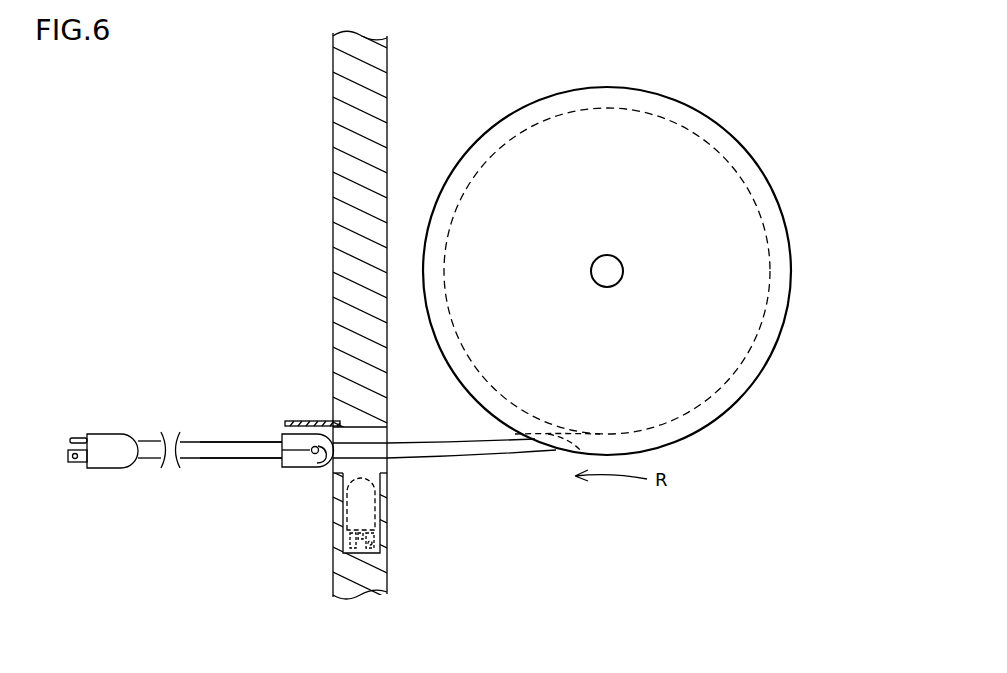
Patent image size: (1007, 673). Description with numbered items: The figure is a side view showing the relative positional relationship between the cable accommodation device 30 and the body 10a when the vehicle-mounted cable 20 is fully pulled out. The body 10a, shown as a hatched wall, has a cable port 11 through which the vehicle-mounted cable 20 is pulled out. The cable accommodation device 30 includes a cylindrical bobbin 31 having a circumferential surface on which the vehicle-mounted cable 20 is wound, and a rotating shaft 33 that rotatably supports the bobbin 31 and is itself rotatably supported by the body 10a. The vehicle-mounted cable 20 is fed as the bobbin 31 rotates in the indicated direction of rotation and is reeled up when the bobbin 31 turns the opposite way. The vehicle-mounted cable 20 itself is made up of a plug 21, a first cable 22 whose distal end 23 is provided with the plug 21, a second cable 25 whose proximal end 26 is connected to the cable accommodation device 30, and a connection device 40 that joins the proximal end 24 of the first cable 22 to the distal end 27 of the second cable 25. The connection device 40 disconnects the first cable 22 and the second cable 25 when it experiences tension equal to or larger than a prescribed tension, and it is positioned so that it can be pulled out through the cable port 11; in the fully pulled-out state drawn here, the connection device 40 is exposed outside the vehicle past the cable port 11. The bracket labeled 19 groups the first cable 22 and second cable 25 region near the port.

The body 10a is at (333, 134).
The cable port 11 is at (338, 470).
The cord retaining unit 19 is at (301, 395).
The vehicle-mounted cable 20 is at (175, 509).
The plug 21 is at (110, 448).
The first cable 22 is at (247, 438).
The distal end 23 is at (147, 452).
The proximal end 24 is at (283, 463).
The second cable 25 is at (402, 438).
The proximal end 26 is at (578, 440).
The distal end 27 is at (345, 457).
The cable accommodation device 30 is at (744, 98).
The bobbin 31 is at (575, 107).
The rotating shaft 33 is at (606, 255).
The connection device 40 is at (296, 462).